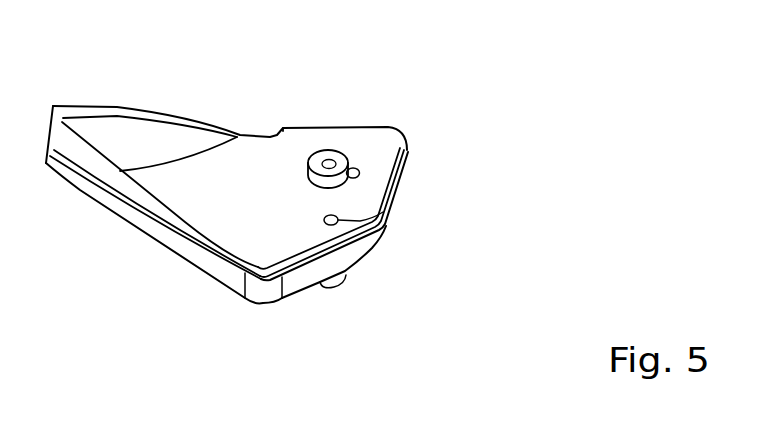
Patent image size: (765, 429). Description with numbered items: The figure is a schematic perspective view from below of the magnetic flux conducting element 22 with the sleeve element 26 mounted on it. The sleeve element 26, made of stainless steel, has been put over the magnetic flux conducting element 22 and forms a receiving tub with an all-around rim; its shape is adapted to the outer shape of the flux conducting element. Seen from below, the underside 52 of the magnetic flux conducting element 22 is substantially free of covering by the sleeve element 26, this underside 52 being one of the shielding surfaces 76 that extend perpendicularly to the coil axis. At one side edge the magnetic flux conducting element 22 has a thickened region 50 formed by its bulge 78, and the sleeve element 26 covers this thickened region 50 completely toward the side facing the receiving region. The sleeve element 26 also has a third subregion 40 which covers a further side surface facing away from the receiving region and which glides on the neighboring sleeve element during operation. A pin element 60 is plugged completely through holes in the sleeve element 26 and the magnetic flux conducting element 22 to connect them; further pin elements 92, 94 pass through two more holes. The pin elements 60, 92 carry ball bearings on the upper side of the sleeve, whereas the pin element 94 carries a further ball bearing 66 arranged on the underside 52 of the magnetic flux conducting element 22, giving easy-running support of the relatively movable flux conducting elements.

The magnetic flux conducting element 22 is at (380, 143).
The sleeve element 26 is at (307, 277).
The third subregion 40 is at (178, 237).
The thickened region 50 is at (130, 153).
The underside 52 is at (253, 185).
The pin element 60 is at (360, 172).
The further ball bearing 66 is at (345, 184).
The shielding surface 76 is at (288, 186).
The bulge 78 is at (155, 149).
The further pin element 92 is at (385, 218).
The further pin element 94 is at (328, 160).